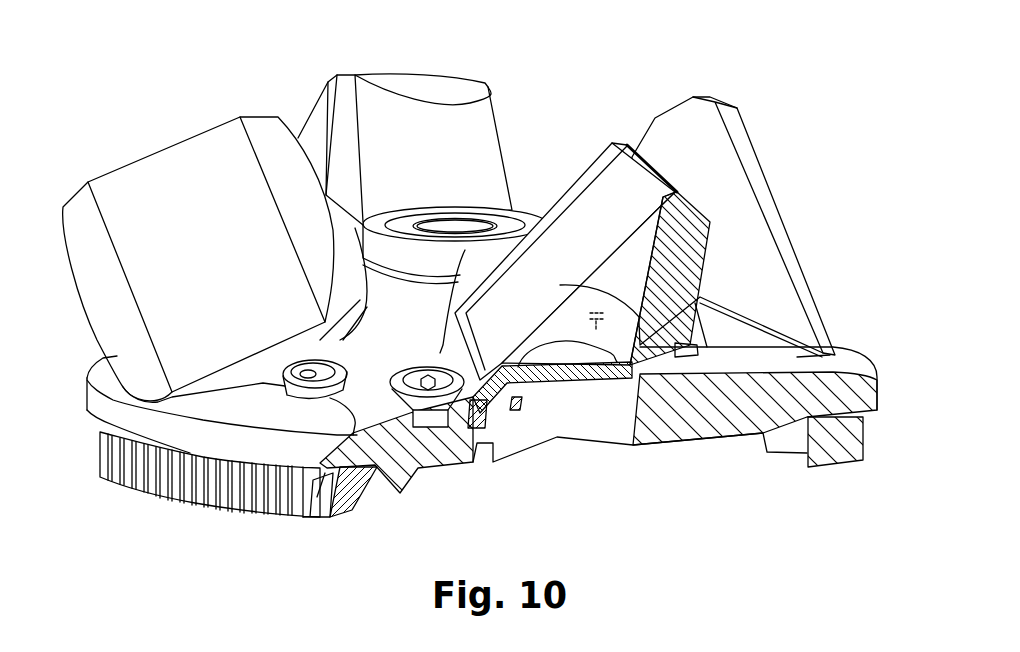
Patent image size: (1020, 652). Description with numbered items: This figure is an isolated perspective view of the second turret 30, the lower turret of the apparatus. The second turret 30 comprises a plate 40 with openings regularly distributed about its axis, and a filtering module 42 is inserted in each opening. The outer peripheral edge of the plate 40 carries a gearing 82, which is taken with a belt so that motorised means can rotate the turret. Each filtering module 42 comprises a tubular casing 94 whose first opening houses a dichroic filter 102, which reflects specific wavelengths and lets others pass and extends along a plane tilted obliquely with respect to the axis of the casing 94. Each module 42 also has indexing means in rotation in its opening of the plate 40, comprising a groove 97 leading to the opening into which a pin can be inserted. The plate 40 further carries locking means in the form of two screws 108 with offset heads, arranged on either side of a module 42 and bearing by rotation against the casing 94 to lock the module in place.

The second turret 30 is at (895, 381).
The plate 40 is at (223, 410).
The filtering module 42 is at (260, 113).
The gearing 82 is at (217, 485).
The tubular casing 94 is at (92, 250).
The groove 97 is at (594, 330).
The dichroic filter 102 is at (160, 202).
The screws 108 is at (332, 495).